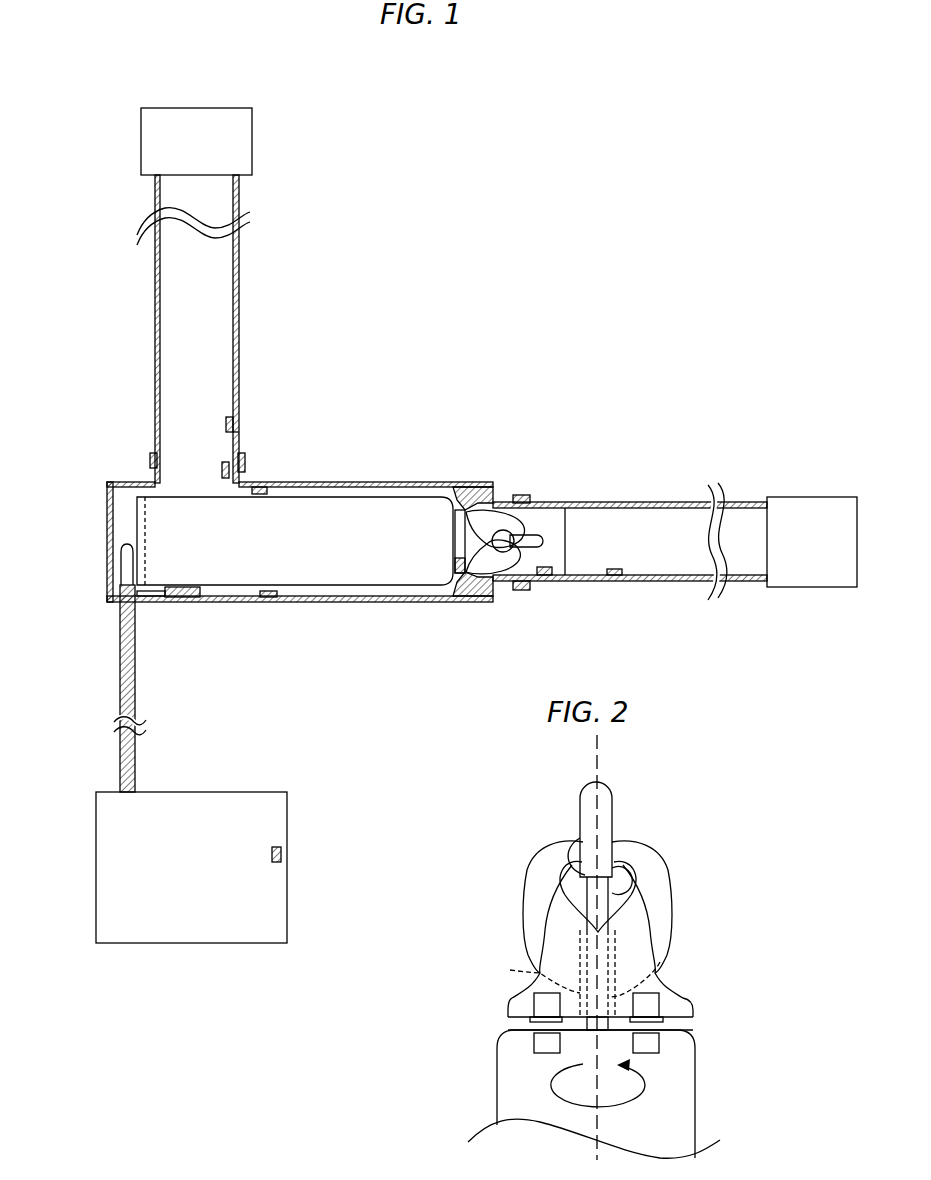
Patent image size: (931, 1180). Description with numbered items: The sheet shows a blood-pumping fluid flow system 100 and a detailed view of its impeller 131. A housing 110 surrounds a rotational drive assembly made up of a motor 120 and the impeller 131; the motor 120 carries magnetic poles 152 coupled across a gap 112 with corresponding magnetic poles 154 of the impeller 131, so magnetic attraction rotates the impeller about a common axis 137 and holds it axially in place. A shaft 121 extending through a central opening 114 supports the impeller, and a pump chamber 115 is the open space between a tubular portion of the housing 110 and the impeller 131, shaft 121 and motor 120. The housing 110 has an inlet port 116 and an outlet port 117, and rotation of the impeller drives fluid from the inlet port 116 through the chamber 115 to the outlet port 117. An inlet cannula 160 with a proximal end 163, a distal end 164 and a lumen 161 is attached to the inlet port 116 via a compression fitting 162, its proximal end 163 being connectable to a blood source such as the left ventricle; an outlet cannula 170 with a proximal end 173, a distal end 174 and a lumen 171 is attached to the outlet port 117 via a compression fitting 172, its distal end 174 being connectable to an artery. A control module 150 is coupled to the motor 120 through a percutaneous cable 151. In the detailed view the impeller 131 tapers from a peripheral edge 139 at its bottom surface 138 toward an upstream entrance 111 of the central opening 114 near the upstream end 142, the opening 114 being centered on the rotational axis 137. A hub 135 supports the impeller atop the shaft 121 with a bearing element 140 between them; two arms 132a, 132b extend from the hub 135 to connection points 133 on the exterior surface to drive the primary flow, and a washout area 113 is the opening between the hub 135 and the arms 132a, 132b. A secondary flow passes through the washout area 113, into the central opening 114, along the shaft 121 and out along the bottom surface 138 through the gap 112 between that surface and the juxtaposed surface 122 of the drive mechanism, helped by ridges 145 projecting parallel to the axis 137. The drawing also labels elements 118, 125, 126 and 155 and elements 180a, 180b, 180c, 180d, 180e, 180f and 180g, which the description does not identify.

In FIG. 1, the system 100 is at (128, 78).
In FIG. 1, the housing 110 is at (392, 481).
In FIG. 1, the upstream entrance 111 is at (170, 605).
In FIG. 2, the upstream entrance 111 is at (570, 915).
In FIG. 2, the gap 112 is at (520, 1026).
In FIG. 2, the washout area 113 is at (570, 895).
In FIG. 2, the central opening 114 is at (540, 968).
In FIG. 1, the pump chamber 115 is at (343, 490).
In FIG. 1, the inlet port 116 is at (570, 505).
In FIG. 1, the outlet port 117 is at (238, 430).
In FIG. 1, the housing cavity 118 is at (118, 500).
In FIG. 1, the motor 120 is at (312, 565).
In FIG. 2, the motor 120 is at (512, 1100).
In FIG. 1, the shaft 121 is at (452, 545).
In FIG. 2, the shaft 121 is at (660, 964).
In FIG. 2, the surface 122 is at (666, 1068).
In FIG. 1, the connector 125 is at (282, 853).
In FIG. 1, the electrical connection 126 is at (137, 525).
In FIG. 1, the impeller 131 is at (470, 512).
In FIG. 2, the impeller 131 is at (674, 823).
In FIG. 2, the arm 132a is at (540, 878).
In FIG. 2, the arm 132b is at (660, 900).
In FIG. 2, the connection points 133 is at (640, 940).
In FIG. 2, the hub 135 is at (590, 870).
In FIG. 2, the rotational axis 137 is at (600, 755).
In FIG. 2, the bottom surface 138 is at (680, 1024).
In FIG. 2, the peripheral edge 139 is at (695, 1008).
In FIG. 2, the bearing element 140 is at (655, 870).
In FIG. 2, the upstream end 142 is at (565, 766).
In FIG. 2, the ridges 145 is at (660, 1037).
In FIG. 1, the control module 150 is at (140, 935).
In FIG. 1, the percutaneous cable 151 is at (120, 665).
In FIG. 1, the magnetic poles 152 is at (150, 597).
In FIG. 2, the magnetic poles 152 is at (530, 1044).
In FIG. 2, the magnetic poles 154 is at (522, 1001).
In FIG. 1, the motor stator 155 is at (175, 597).
In FIG. 1, the inlet cannula 160 is at (635, 502).
In FIG. 1, the lumen 161 is at (637, 555).
In FIG. 1, the compression fitting 162 is at (520, 590).
In FIG. 1, the proximal end 163 is at (800, 497).
In FIG. 1, the distal end 164 is at (520, 496).
In FIG. 1, the outlet cannula 170 is at (240, 345).
In FIG. 1, the lumen 171 is at (213, 303).
In FIG. 1, the compression fitting 172 is at (150, 462).
In FIG. 1, the proximal end 173 is at (252, 142).
In FIG. 1, the distal end 174 is at (245, 460).
In FIG. 1, the sensor 180a is at (226, 420).
In FIG. 1, the sensor 180b is at (222, 468).
In FIG. 1, the sensor 180c is at (263, 486).
In FIG. 1, the sensor 180d is at (268, 598).
In FIG. 1, the sensor 180e is at (455, 562).
In FIG. 1, the sensor 180f is at (545, 577).
In FIG. 1, the sensor 180g is at (612, 576).